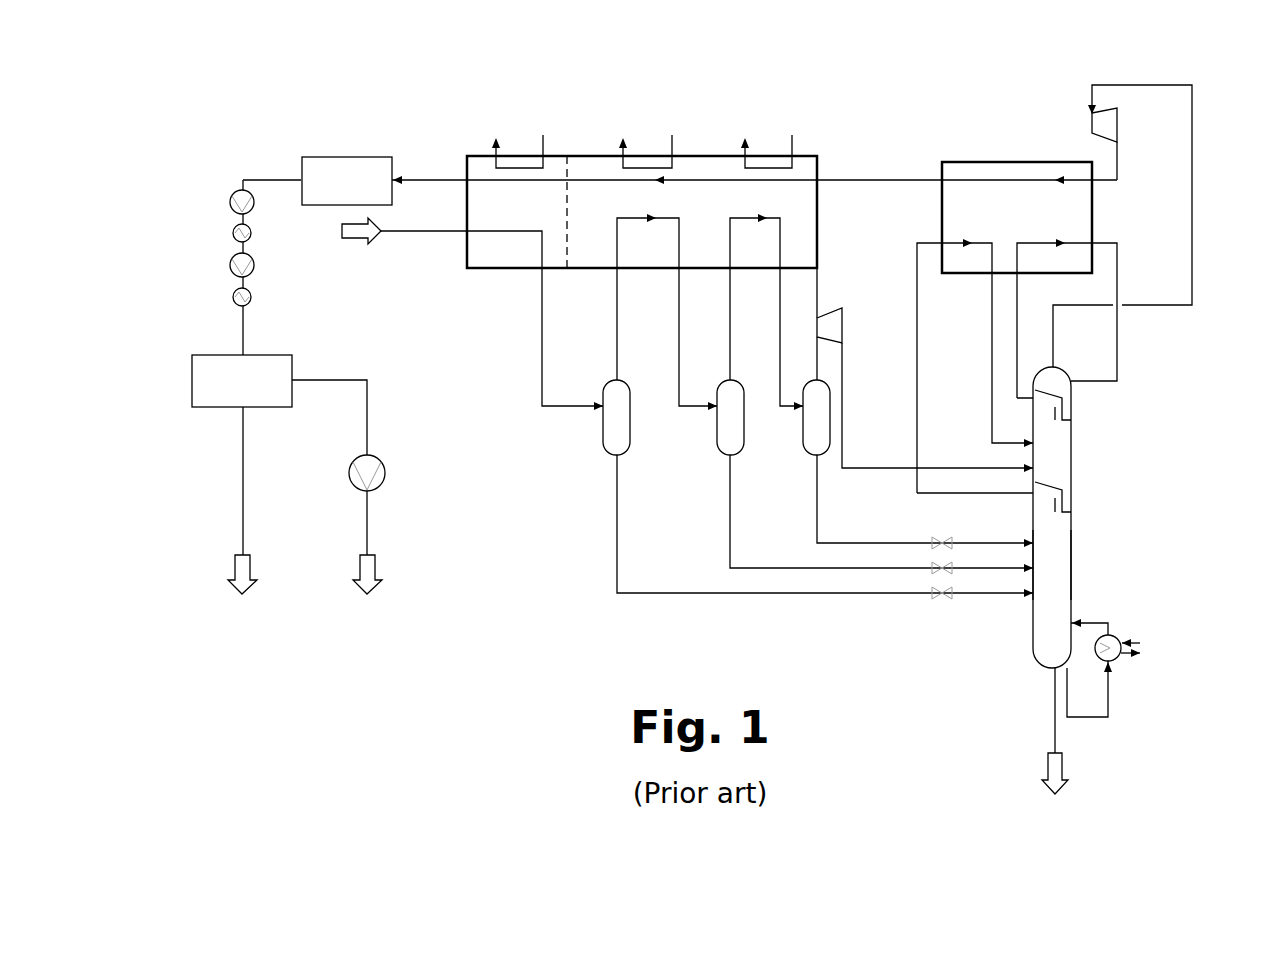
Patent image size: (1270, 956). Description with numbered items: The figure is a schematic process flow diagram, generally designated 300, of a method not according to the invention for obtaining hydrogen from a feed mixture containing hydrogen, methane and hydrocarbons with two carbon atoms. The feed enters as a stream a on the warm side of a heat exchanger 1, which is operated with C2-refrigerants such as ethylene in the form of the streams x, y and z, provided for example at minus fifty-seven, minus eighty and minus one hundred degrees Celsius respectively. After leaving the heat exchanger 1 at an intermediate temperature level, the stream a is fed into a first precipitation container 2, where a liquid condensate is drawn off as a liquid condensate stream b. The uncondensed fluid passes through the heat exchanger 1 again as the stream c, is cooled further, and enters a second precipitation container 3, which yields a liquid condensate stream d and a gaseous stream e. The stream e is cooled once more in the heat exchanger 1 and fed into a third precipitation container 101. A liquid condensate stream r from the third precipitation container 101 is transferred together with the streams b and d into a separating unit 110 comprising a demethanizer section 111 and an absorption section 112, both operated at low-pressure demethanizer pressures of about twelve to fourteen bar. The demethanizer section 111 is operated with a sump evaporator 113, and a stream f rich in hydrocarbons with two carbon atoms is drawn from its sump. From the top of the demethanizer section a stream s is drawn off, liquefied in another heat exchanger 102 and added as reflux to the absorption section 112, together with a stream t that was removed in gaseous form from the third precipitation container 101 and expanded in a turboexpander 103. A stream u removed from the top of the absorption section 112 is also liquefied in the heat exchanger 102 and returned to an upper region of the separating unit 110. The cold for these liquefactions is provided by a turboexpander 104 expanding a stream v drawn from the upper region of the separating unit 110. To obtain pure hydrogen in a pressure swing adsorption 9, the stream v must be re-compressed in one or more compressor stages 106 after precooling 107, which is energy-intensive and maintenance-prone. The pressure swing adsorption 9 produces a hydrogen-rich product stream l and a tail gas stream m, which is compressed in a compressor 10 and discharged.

The heat exchanger 1 is at (520, 272).
The first precipitation container 2 is at (603, 433).
The second precipitation container 3 is at (717, 433).
The pressure swing adsorption 9 is at (272, 354).
The compressor 10 is at (385, 472).
The third precipitation container 101 is at (803, 437).
The heat exchanger 102 is at (967, 161).
The turboexpander 103 is at (830, 310).
The turboexpander 104 is at (1118, 130).
The compressor stages 106 is at (219, 171).
The precooling 107 is at (343, 156).
The separating unit 110 is at (1082, 430).
The demethanizer section 111 is at (1053, 555).
The absorption section 112 is at (1055, 462).
The sump evaporator 113 is at (1117, 627).
The schematic process flow diagram 300 is at (491, 682).
The feed stream a is at (447, 233).
The liquid condensate stream b is at (617, 517).
The uncondensed fluid stream c is at (617, 328).
The liquid condensate stream d is at (730, 517).
The gaseous stream e is at (728, 330).
The sump stream f is at (1050, 703).
The hydrogen-rich product stream l is at (243, 487).
The tail gas stream m is at (367, 403).
The liquid condensate stream r is at (817, 495).
The top stream of demethanizer section s is at (917, 383).
The expanded gaseous stream t is at (868, 460).
The absorption section top stream u is at (1117, 333).
The hydrogen-containing stream v is at (260, 180).
The C2-refrigerant stream x is at (543, 147).
The C2-refrigerant stream y is at (672, 147).
The C2-refrigerant stream z is at (792, 147).